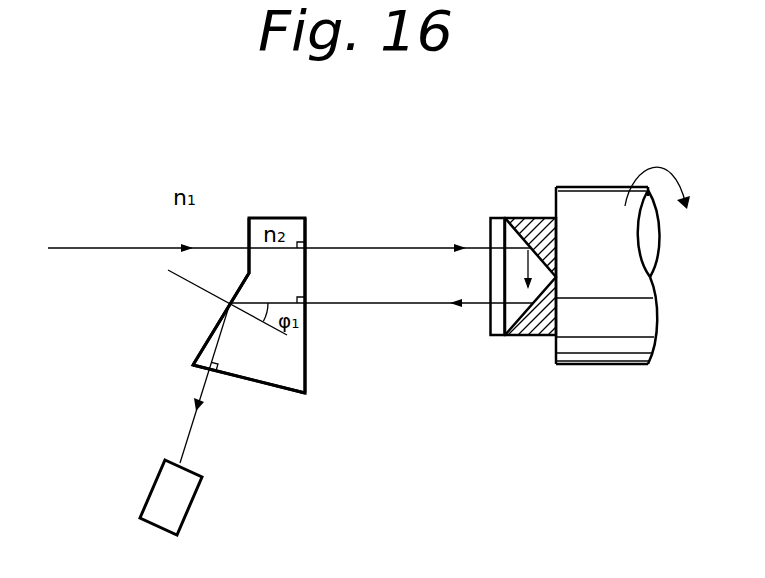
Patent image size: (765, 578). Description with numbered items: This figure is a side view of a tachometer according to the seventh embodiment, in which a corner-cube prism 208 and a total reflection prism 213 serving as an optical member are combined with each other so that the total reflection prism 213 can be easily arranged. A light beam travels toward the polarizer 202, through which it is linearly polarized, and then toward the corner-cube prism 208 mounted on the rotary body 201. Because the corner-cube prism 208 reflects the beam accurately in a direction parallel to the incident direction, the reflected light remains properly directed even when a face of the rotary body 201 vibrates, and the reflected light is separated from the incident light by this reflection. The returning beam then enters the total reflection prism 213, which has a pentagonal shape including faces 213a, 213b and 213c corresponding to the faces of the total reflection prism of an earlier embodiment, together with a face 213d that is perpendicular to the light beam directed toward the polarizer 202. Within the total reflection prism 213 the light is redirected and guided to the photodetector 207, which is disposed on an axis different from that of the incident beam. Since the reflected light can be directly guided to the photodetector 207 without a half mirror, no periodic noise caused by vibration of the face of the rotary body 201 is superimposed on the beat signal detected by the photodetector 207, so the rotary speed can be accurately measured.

The rotary body 201 is at (605, 350).
The polarizer 202 is at (490, 335).
The photodetector 207 is at (180, 505).
The corner-cube prism 208 is at (527, 337).
The total reflection prism 213 is at (300, 380).
The face of total reflection prism 213a is at (213, 333).
The face of total reflection prism 213b is at (307, 320).
The face of total reflection prism 213c is at (258, 382).
The face perpendicular to light beam 213d is at (249, 230).